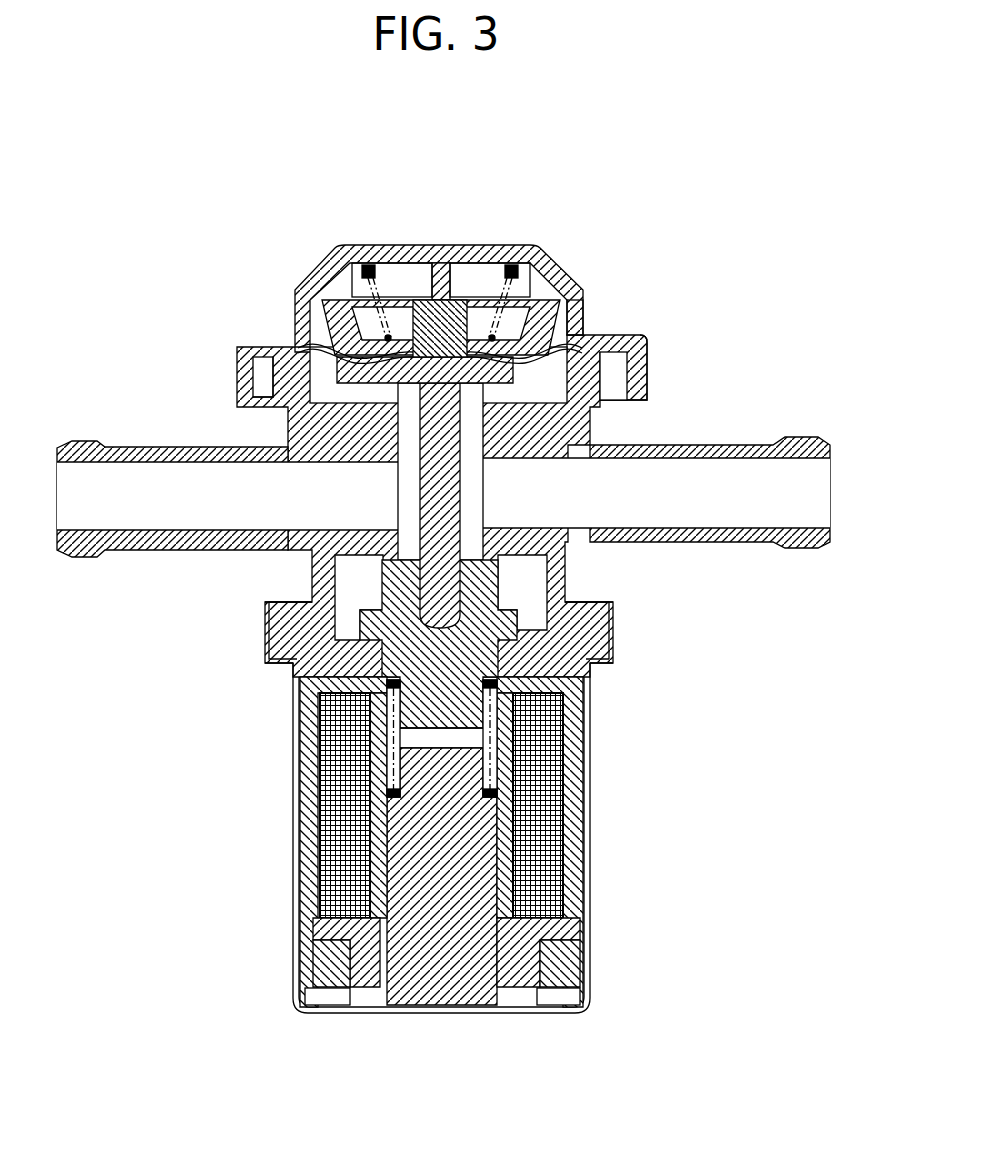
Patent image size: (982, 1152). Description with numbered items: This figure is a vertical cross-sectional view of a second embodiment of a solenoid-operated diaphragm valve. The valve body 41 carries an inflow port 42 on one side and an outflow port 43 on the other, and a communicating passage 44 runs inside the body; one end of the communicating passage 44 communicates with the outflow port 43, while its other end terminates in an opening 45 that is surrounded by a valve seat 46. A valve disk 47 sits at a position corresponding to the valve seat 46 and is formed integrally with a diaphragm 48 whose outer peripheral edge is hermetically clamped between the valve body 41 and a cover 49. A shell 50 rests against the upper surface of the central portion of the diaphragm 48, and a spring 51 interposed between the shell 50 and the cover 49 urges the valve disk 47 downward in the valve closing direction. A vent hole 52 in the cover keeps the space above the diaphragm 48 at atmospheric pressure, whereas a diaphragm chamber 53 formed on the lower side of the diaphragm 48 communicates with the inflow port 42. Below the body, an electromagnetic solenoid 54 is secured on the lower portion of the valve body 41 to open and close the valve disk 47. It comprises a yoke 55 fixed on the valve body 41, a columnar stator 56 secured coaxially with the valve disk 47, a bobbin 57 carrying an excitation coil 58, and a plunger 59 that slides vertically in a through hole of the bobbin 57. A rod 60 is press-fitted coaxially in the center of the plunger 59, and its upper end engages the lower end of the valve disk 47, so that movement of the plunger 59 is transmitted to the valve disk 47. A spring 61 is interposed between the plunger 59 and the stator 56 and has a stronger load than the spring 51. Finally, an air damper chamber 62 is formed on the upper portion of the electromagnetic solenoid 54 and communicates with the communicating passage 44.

The valve body 41 is at (265, 412).
The inflow port 42 is at (785, 437).
The outflow port 43 is at (87, 441).
The communicating passage 44 is at (470, 487).
The opening 45 is at (482, 418).
The valve seat 46 is at (600, 415).
The valve disk 47 is at (450, 313).
The diaphragm 48 is at (567, 343).
The cover 49 is at (368, 262).
The shell 50 is at (330, 270).
The spring 51 is at (381, 283).
The vent hole 52 is at (583, 312).
The diaphragm chamber 53 is at (625, 386).
The electromagnetic solenoid 54 is at (591, 828).
The yoke 55 is at (603, 652).
The columnar stator 56 is at (487, 948).
The bobbin 57 is at (510, 882).
The excitation coil 58 is at (563, 765).
The plunger 59 is at (483, 587).
The rod 60 is at (425, 487).
The spring 61 is at (493, 727).
The air damper chamber 62 is at (537, 612).